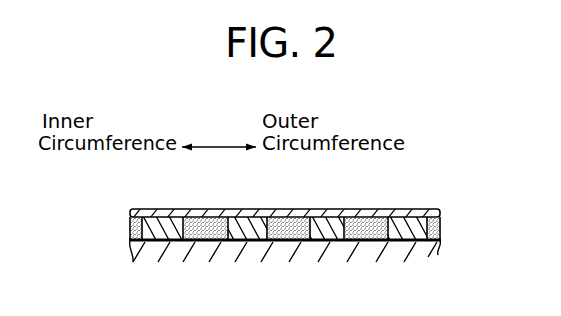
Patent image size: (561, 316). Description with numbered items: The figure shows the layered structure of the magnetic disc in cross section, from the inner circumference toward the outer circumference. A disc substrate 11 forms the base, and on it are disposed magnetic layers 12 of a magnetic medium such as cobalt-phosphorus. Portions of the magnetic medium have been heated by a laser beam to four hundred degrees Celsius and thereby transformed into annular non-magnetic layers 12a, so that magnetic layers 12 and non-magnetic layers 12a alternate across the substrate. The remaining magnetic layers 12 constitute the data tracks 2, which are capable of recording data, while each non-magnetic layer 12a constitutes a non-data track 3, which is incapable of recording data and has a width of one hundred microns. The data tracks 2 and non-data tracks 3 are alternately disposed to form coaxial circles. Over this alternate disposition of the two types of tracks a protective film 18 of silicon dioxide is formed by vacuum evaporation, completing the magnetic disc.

The data track 2 is at (183, 207).
The non-data track 3 is at (226, 207).
The disc substrate 11 is at (431, 257).
The magnetic layer 12 is at (135, 227).
The non-magnetic layer 12a is at (441, 227).
The protective film 18 is at (432, 209).